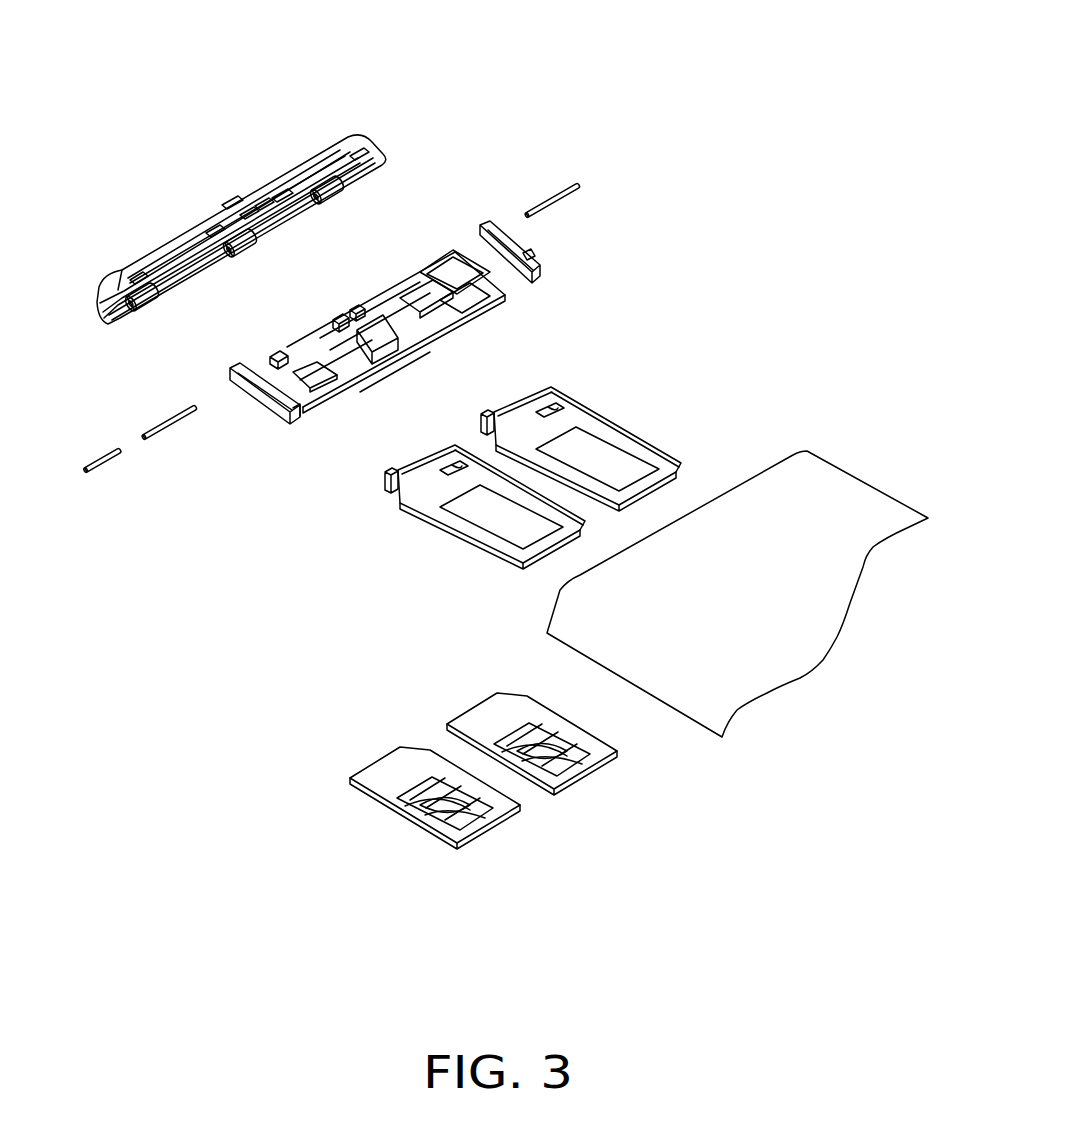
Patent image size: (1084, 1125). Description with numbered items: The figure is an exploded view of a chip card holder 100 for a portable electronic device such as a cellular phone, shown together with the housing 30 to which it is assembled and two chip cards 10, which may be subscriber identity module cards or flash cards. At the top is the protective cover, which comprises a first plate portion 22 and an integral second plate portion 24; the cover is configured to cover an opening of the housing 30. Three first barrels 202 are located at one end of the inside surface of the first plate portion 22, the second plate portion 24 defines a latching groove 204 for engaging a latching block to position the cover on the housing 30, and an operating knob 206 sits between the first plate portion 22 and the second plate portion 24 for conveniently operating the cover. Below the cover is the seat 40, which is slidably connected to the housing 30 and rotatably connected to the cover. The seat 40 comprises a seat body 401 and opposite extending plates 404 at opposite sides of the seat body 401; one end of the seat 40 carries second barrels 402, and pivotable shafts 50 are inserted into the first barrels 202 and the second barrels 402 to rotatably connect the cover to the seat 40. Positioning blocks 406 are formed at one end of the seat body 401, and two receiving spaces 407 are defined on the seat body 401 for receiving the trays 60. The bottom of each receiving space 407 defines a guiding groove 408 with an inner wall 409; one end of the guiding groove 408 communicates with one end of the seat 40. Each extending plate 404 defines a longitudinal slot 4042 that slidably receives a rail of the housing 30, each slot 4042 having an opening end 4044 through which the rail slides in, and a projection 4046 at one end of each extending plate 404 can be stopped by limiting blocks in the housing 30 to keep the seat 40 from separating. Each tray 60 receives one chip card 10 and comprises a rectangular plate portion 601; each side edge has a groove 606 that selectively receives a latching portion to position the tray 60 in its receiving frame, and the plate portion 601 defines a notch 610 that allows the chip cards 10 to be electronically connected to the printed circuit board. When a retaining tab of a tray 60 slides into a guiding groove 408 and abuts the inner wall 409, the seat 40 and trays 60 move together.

The chip card holder 100 is at (288, 48).
The chip card 10 is at (392, 770).
The first plate portion 22 is at (103, 300).
The second plate portion 24 is at (311, 166).
The first barrel 202 is at (340, 195).
The latching groove 204 is at (270, 223).
The operating knob 206 is at (222, 207).
The housing 30 is at (797, 488).
The seat 40 is at (510, 212).
The seat body 401 is at (270, 372).
The second barrel 402 is at (277, 355).
The extending plate 404 is at (545, 272).
The longitudinal slot 4042 is at (237, 390).
The opening end 4044 is at (297, 415).
The projection 4046 is at (530, 250).
The positioning block 406 is at (345, 312).
The receiving space 407 is at (333, 383).
The guiding groove 408 is at (460, 320).
The inner wall 409 is at (435, 308).
The pivotable shaft 50 is at (580, 185).
The tray 60 is at (622, 387).
The rectangular plate portion 601 is at (588, 425).
The groove 606 is at (438, 518).
The notch 610 is at (616, 465).